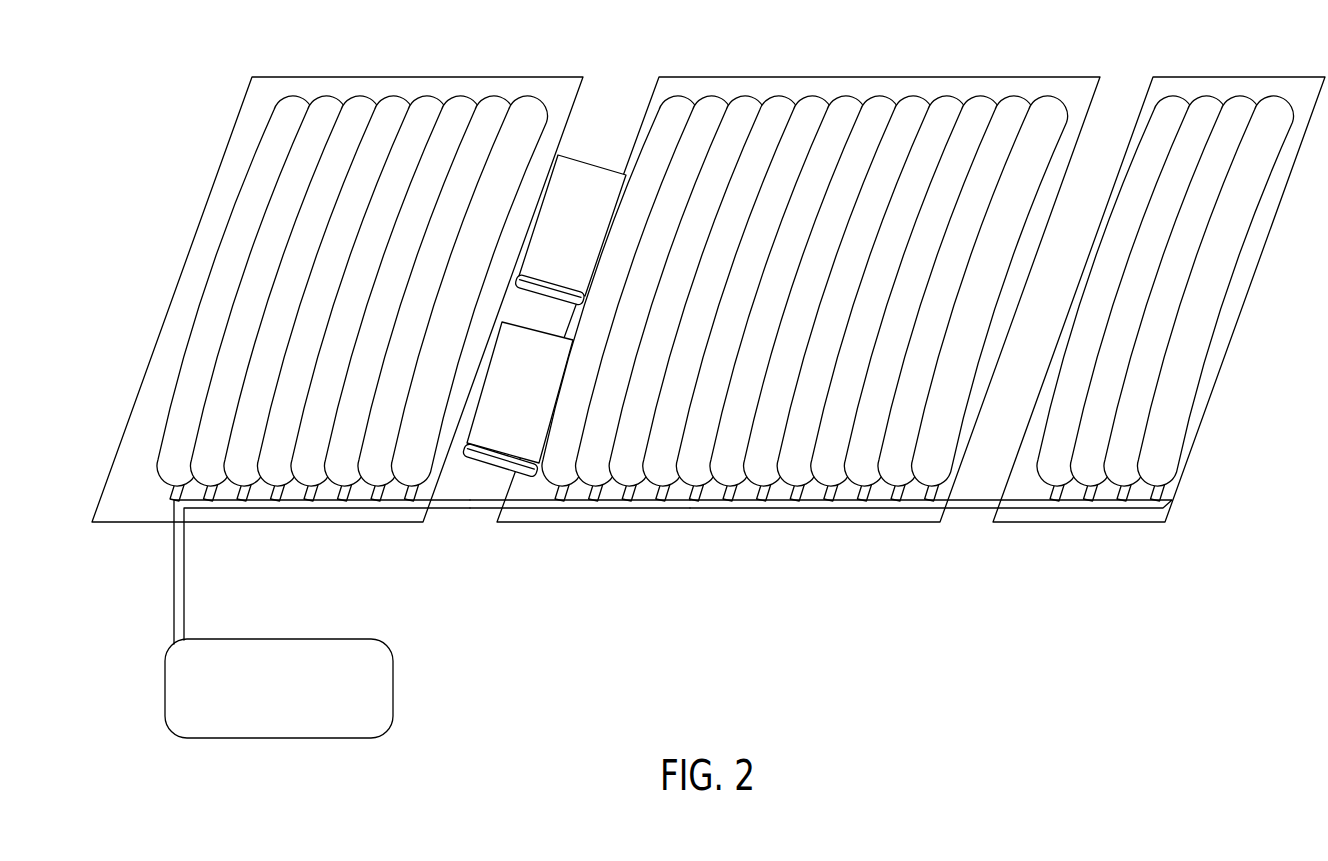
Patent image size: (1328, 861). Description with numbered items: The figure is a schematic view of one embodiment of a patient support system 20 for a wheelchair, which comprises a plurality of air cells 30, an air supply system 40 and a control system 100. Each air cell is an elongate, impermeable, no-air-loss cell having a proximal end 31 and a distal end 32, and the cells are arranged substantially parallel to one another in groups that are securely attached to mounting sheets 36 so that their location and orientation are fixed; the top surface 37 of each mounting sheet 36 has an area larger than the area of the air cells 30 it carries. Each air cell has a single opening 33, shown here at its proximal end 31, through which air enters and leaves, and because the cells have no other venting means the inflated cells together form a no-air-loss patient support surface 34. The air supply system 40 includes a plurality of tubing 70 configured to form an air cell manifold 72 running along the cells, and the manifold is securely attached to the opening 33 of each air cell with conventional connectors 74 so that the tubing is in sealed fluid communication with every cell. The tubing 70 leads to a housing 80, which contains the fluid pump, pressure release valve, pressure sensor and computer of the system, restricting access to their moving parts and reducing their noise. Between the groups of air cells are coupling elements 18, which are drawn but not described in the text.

The connector 18 is at (592, 174).
The patient support system 20 is at (708, 343).
The air cells 30 is at (708, 279).
The proximal end 31 is at (158, 487).
The distal end 32 is at (357, 100).
The opening 33 is at (1050, 492).
The no-air-loss patient support surface 34 is at (1213, 288).
The mounting sheet 36 is at (702, 292).
The top surface 37 is at (1073, 90).
The air supply system 40 is at (668, 619).
The tubing 70 is at (578, 502).
The air cell manifold 72 is at (752, 505).
The connectors 74 is at (312, 501).
The housing 80 is at (394, 688).
The control system 100 is at (708, 385).